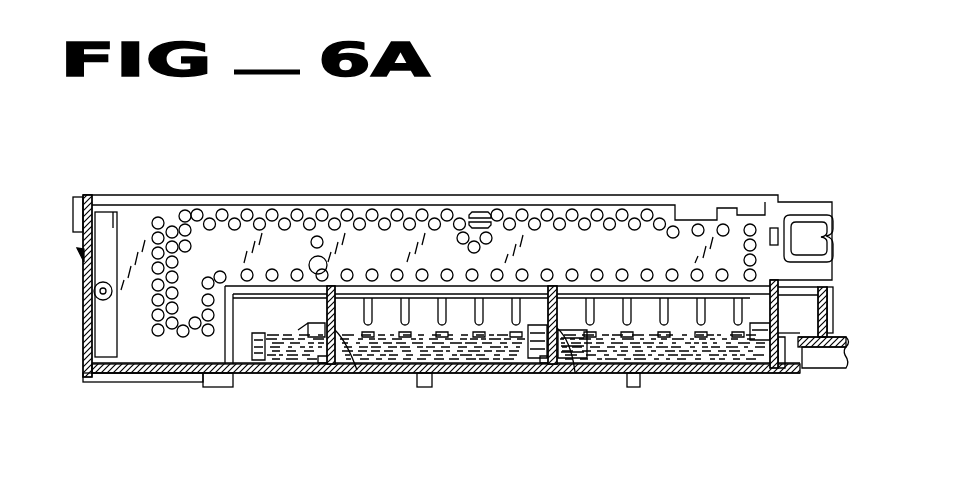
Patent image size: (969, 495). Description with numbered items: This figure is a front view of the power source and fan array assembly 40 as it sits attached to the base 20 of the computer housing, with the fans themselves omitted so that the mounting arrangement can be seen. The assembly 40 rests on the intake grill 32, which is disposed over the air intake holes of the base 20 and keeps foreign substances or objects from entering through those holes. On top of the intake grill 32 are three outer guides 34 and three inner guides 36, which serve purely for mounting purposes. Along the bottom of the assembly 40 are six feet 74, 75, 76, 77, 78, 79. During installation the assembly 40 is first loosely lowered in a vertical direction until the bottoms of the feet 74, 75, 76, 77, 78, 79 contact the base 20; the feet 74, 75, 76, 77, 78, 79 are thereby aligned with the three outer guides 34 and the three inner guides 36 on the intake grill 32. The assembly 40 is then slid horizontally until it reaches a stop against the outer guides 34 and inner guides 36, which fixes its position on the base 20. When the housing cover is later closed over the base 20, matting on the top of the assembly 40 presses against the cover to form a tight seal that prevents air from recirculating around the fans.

The base 20 is at (847, 341).
The intake grill 32 is at (472, 375).
The outer guides 34 is at (284, 375).
The inner guides 36 is at (318, 367).
The power source and fan array assembly 40 is at (834, 270).
The foot 74 is at (337, 372).
The foot 75 is at (563, 372).
The foot 76 is at (785, 372).
The foot 77 is at (356, 372).
The foot 78 is at (575, 373).
The foot 79 is at (740, 372).